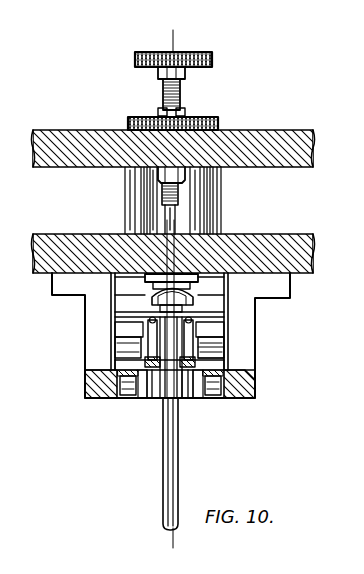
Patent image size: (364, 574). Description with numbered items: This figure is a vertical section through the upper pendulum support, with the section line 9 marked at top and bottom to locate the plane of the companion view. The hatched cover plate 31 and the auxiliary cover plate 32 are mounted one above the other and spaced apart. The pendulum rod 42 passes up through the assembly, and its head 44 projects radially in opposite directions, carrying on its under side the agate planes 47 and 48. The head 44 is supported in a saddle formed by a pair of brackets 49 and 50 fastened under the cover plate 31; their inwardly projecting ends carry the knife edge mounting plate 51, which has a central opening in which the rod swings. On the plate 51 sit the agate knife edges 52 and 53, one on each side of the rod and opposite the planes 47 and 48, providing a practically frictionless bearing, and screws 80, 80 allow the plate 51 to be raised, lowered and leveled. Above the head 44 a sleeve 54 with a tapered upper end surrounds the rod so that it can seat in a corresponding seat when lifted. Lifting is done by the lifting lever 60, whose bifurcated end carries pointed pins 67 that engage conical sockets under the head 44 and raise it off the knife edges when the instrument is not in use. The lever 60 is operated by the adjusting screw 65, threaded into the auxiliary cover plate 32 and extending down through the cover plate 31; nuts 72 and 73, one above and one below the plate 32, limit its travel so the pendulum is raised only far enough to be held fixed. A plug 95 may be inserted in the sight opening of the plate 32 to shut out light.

The section line 9- 9 is at (164, 283).
The nut 72 is at (187, 112).
The plug 95 is at (218, 122).
The auxiliary cover plate 32 is at (73, 167).
The cover plate 31 is at (38, 253).
The nut 73 is at (185, 176).
The adjusting screw 65 is at (176, 217).
The head of the pendulum 44 is at (130, 323).
The sleeve 54 is at (230, 296).
The pointed pins 67 is at (192, 330).
The plane 47 is at (228, 340).
The knife edge 52 is at (228, 355).
The plane 48 is at (115, 347).
The knife edge 53 is at (113, 360).
The bracket 50 is at (87, 373).
The bracket 49 is at (255, 377).
The screws 80 is at (130, 398).
The lifting lever 60 is at (160, 383).
The knife edge mounting plate 51 is at (182, 377).
The rod 42 is at (170, 460).